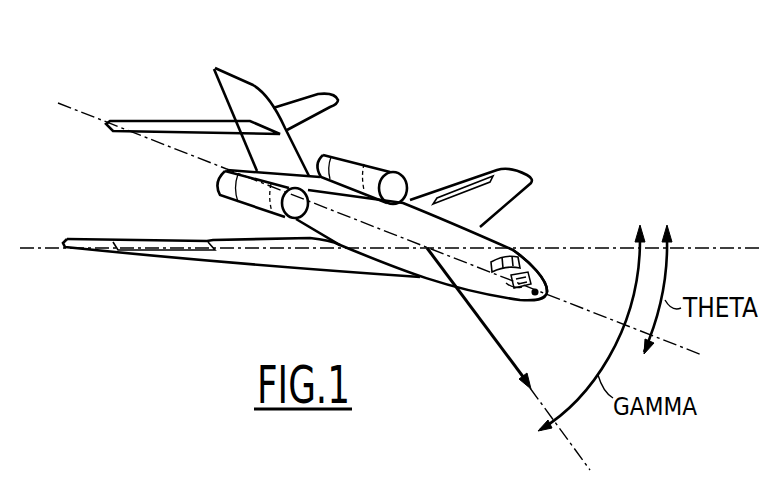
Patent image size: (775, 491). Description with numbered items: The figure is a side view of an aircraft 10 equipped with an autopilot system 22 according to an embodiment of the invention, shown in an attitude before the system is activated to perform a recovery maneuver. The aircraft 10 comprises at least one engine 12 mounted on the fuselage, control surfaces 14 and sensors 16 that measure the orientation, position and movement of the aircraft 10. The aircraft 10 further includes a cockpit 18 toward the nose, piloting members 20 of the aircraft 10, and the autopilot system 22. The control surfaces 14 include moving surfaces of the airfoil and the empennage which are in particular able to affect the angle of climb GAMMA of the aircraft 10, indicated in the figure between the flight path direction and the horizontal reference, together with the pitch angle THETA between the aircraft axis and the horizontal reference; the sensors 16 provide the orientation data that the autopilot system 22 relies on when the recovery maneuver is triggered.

The aircraft 10 is at (437, 130).
The engine 12 is at (360, 167).
The control surfaces 14 is at (138, 241).
The sensors 16 is at (537, 294).
The cockpit 18 is at (504, 249).
The piloting members 20 is at (538, 266).
The autopilot system 22 is at (525, 268).